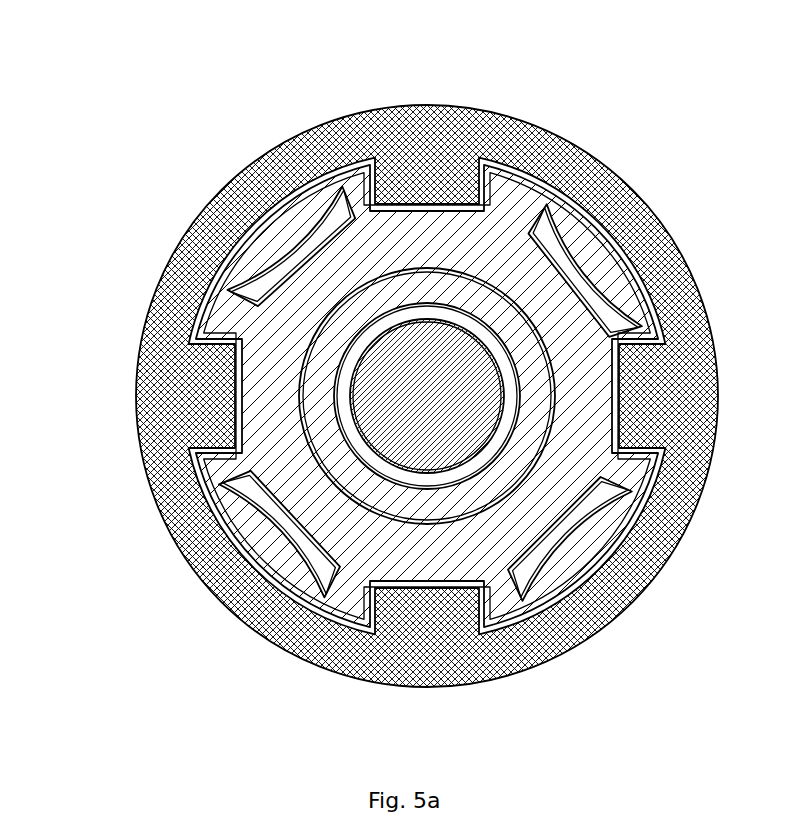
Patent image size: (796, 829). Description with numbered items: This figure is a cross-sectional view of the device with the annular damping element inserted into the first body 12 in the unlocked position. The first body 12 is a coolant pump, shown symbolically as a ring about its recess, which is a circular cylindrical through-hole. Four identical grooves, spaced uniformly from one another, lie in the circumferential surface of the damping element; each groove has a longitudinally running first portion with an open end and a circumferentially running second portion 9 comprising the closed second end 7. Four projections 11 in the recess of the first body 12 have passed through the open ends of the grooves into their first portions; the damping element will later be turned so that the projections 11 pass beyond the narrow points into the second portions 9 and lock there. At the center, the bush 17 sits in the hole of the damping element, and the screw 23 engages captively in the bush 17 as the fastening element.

The second end of groove 7 is at (338, 600).
The second portion of groove 9 is at (293, 233).
The projection 11 is at (443, 172).
The first body 12 is at (586, 630).
The bush 17 is at (473, 493).
The screw 23 is at (388, 375).